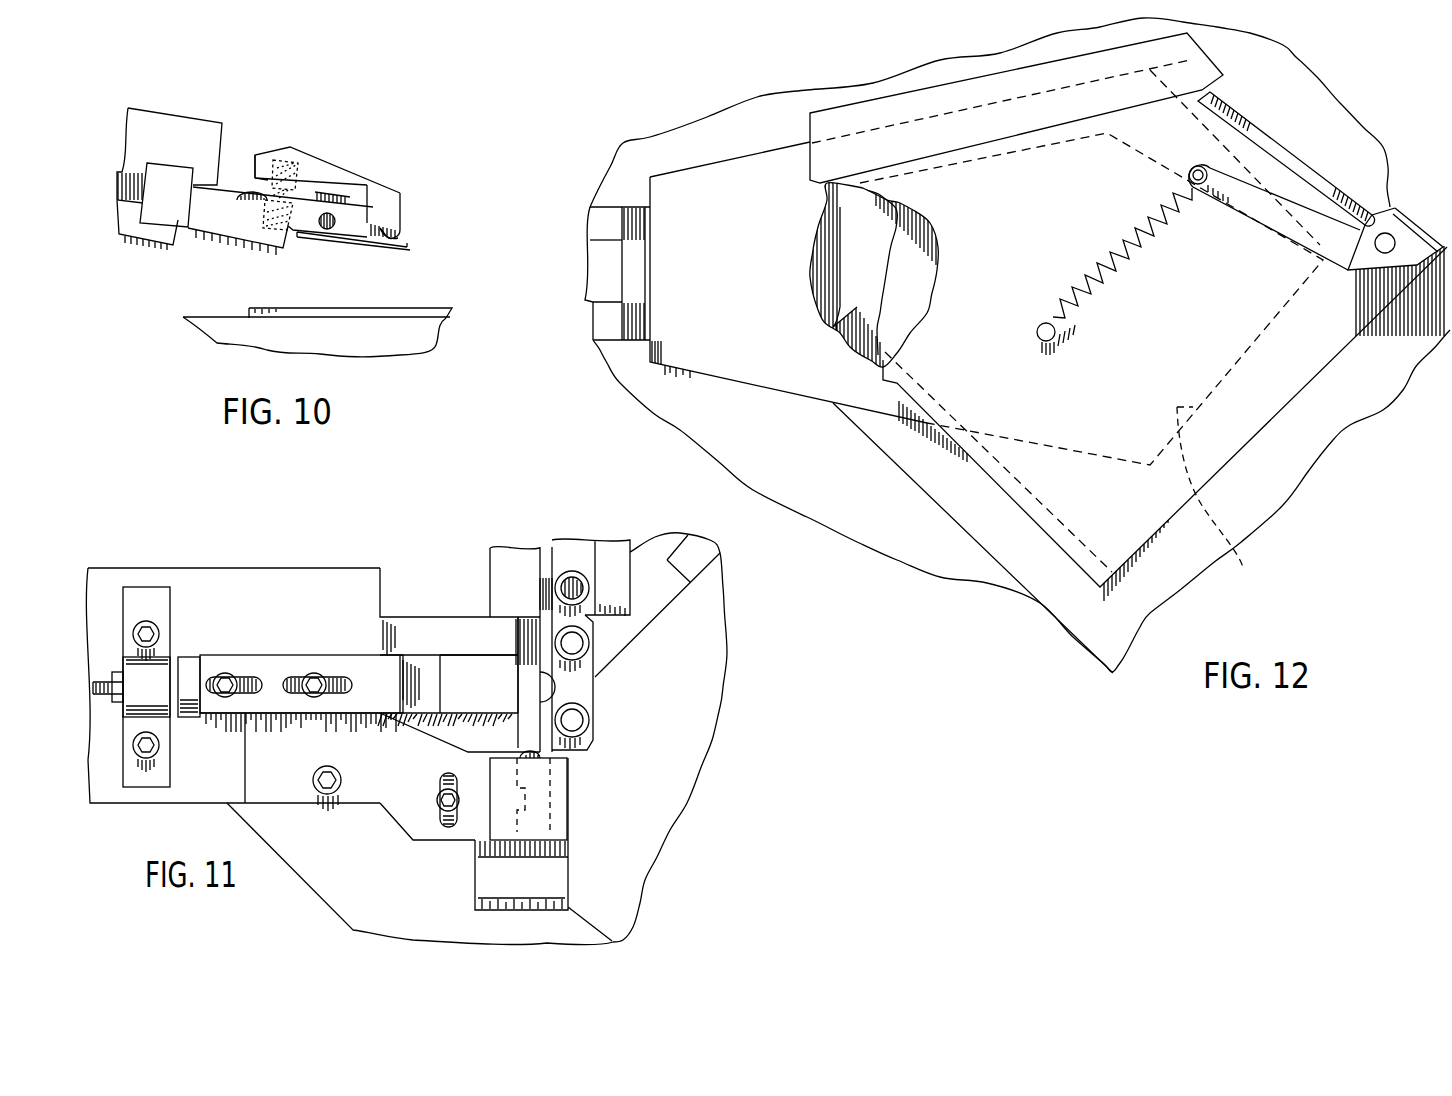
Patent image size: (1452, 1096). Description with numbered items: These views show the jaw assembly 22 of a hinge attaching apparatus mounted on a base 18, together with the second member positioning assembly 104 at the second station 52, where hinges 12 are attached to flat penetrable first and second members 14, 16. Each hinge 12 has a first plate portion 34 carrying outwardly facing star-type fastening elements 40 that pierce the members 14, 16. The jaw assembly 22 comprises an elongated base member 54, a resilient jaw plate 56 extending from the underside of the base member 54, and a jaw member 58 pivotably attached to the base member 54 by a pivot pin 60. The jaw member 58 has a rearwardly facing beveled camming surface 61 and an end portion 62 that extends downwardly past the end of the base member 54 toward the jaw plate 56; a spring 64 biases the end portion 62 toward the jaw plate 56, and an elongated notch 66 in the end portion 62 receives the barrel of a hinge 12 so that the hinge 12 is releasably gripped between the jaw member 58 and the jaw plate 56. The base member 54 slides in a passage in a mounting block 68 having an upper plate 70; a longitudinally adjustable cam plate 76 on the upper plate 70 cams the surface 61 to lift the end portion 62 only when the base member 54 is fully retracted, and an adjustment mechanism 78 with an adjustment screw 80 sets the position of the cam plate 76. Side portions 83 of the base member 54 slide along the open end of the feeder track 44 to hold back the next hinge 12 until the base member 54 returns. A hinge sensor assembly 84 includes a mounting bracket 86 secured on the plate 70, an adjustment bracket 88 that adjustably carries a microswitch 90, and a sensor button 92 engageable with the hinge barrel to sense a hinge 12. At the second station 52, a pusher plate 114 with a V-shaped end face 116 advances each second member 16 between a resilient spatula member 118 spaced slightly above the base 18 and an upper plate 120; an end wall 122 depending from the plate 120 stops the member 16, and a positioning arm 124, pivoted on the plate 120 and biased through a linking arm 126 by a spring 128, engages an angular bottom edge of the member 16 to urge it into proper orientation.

In FIG. 11, the hinge 12 is at (572, 580).
In FIG. 10, the first member 14 is at (428, 308).
In FIG. 12, the first member 14 is at (980, 522).
In FIG. 12, the second member 16 is at (722, 370).
In FIG. 10, the base 18 is at (412, 338).
In FIG. 11, the base 18 is at (338, 872).
In FIG. 12, the jaw assembly 22 is at (613, 343).
In FIG. 11, the first plate portion 34 is at (593, 678).
In FIG. 11, the fastening elements 40 is at (590, 730).
In FIG. 11, the feeder track 44 is at (615, 562).
In FIG. 12, the second station 52 is at (635, 198).
In FIG. 10, the base member 54 is at (223, 187).
In FIG. 10, the resilient jaw plate 56 is at (385, 249).
In FIG. 10, the jaw member 58 is at (356, 167).
In FIG. 11, the jaw member 58 is at (463, 668).
In FIG. 12, the jaw member 58 is at (633, 240).
In FIG. 10, the pivot pin 60 is at (327, 230).
In FIG. 10, the beveled camming surface 61 is at (273, 145).
In FIG. 11, the beveled camming surface 61 is at (422, 667).
In FIG. 10, the end portion 62 is at (400, 200).
In FIG. 11, the end portion 62 is at (588, 748).
In FIG. 12, the end portion 62 is at (628, 331).
In FIG. 10, the spring 64 is at (300, 187).
In FIG. 10, the elongated notch 66 is at (395, 240).
In FIG. 11, the mounting block 68 is at (221, 610).
In FIG. 11, the upper plate 70 is at (343, 582).
In FIG. 11, the cam plate 76 is at (273, 667).
In FIG. 11, the adjustment mechanism 78 is at (147, 598).
In FIG. 11, the adjustment screw 80 is at (103, 675).
In FIG. 11, the side portions 83 is at (490, 730).
In FIG. 11, the hinge sensor assembly 84 is at (406, 816).
In FIG. 10, the mounting bracket 86 is at (197, 133).
In FIG. 11, the mounting bracket 86 is at (280, 793).
In FIG. 11, the adjustment bracket 88 is at (488, 880).
In FIG. 10, the microswitch 90 is at (247, 200).
In FIG. 11, the microswitch 90 is at (568, 843).
In FIG. 11, the sensor button 92 is at (558, 754).
In FIG. 12, the second member positioning assembly 104 is at (1433, 231).
In FIG. 12, the pusher plate 114 is at (942, 583).
In FIG. 12, the V-shaped end face 116 is at (1220, 501).
In FIG. 12, the resilient spatula member 118 is at (853, 307).
In FIG. 12, the upper plate 120 is at (940, 373).
In FIG. 12, the end wall 122 is at (1192, 60).
In FIG. 12, the positioning arm 124 is at (1257, 153).
In FIG. 12, the linking arm 126 is at (1253, 203).
In FIG. 12, the spring 128 is at (1140, 257).